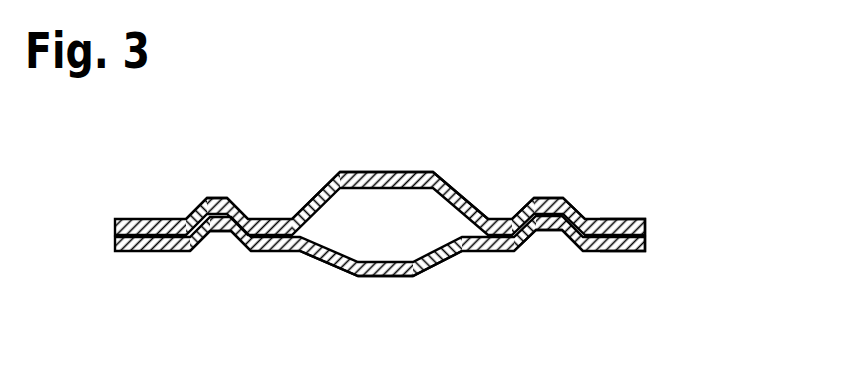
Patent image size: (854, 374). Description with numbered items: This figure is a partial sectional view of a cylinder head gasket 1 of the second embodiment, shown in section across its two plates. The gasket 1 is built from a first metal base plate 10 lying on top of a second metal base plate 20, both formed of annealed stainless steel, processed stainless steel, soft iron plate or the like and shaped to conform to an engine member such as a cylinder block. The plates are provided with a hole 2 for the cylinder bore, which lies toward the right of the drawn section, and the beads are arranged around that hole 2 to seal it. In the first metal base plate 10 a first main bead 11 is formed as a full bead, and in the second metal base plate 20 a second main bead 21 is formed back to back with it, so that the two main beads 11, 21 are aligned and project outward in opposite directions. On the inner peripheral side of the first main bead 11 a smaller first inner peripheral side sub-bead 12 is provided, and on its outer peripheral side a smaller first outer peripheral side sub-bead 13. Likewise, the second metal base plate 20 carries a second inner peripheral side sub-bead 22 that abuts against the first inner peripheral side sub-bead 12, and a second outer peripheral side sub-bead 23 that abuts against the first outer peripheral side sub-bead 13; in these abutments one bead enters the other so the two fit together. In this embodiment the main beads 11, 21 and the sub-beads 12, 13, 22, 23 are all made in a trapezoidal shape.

The cylinder head gasket 1 is at (380, 200).
The hole for cylinder bore 2 is at (717, 251).
The first metal base plate 10 is at (160, 219).
The first main bead 11 is at (387, 172).
The first inner peripheral side sub-bead 12 is at (543, 198).
The first outer peripheral side sub-bead 13 is at (225, 198).
The second metal base plate 20 is at (145, 252).
The second main bead 21 is at (383, 278).
The second inner peripheral side sub-bead 22 is at (547, 234).
The second outer peripheral side sub-bead 23 is at (223, 234).